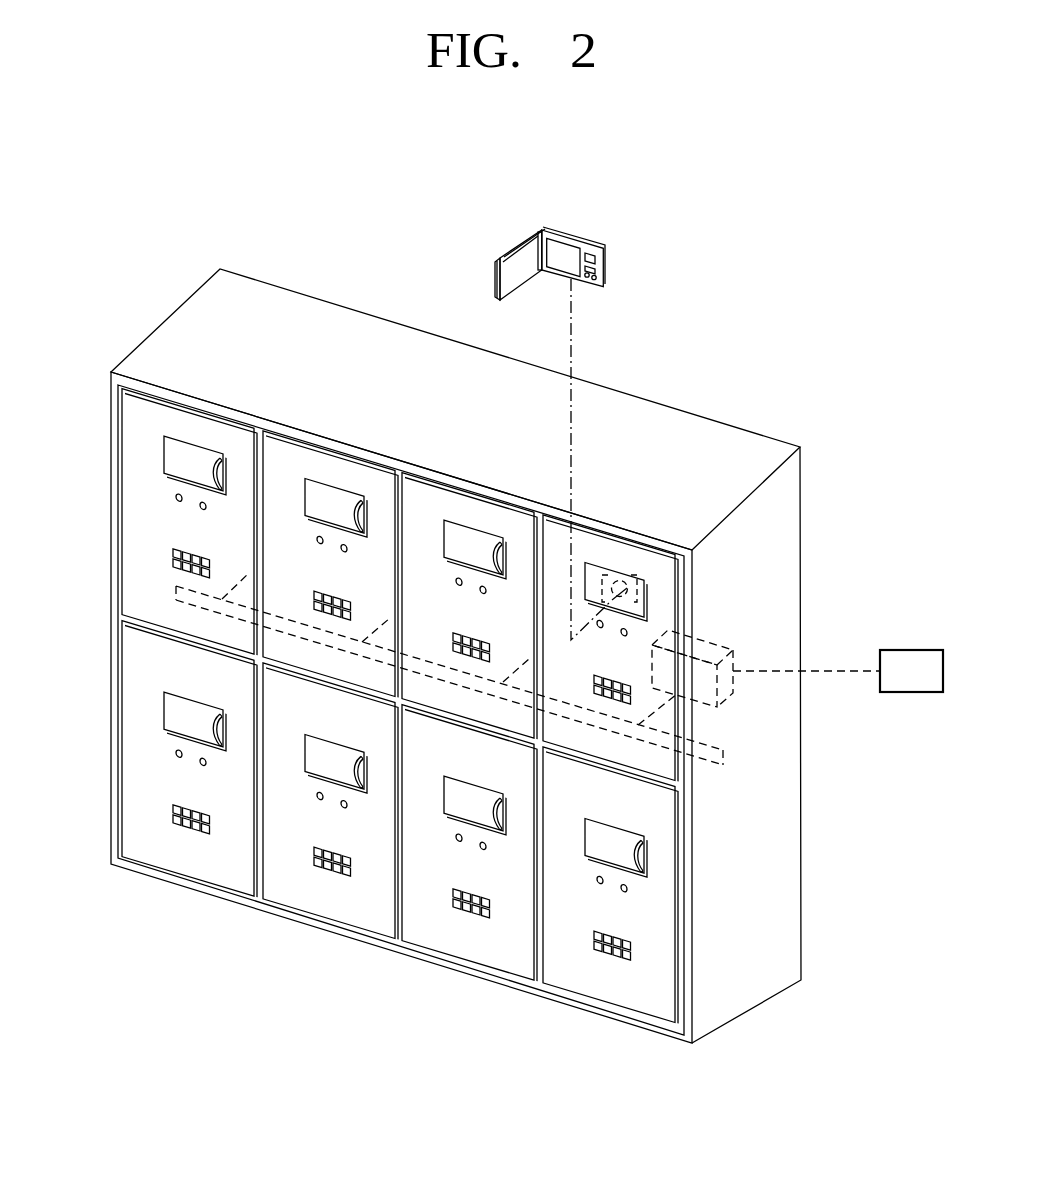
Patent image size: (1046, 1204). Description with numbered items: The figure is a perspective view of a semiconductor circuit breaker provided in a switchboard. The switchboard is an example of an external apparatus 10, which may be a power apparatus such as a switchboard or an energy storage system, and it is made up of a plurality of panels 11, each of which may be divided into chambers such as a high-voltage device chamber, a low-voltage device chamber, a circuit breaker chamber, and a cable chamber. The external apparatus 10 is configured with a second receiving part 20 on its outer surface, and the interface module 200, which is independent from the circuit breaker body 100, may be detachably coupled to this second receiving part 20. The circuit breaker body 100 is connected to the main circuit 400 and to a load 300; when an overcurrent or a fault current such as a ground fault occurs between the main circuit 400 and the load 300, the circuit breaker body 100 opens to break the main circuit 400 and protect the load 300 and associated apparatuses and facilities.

The external apparatus 10 is at (463, 656).
The panel 11 is at (135, 525).
The second receiving part 20 is at (633, 590).
The circuit breaker body 100 is at (707, 645).
The interface module 200 is at (599, 229).
The load 300 is at (912, 650).
The main circuit 400 is at (725, 762).